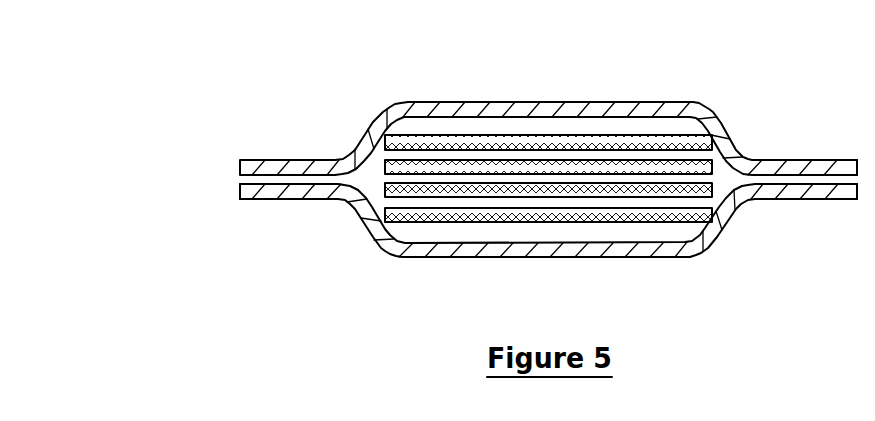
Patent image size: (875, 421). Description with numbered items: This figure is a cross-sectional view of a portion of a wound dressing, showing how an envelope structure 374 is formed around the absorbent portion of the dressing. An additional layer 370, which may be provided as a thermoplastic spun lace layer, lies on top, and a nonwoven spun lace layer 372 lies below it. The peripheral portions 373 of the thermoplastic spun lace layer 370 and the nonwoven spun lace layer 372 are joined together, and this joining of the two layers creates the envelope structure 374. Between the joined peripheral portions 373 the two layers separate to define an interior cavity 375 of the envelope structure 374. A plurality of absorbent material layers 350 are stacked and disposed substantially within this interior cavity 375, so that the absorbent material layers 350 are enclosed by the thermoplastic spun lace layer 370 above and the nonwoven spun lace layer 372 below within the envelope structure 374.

The envelope structure 374 is at (330, 58).
The peripheral portions 373 is at (262, 159).
The interior cavity 375 is at (370, 178).
The additional layer 370 is at (610, 101).
The nonwoven spun lace layer 372 is at (731, 235).
The absorbent material layers 350 is at (720, 167).